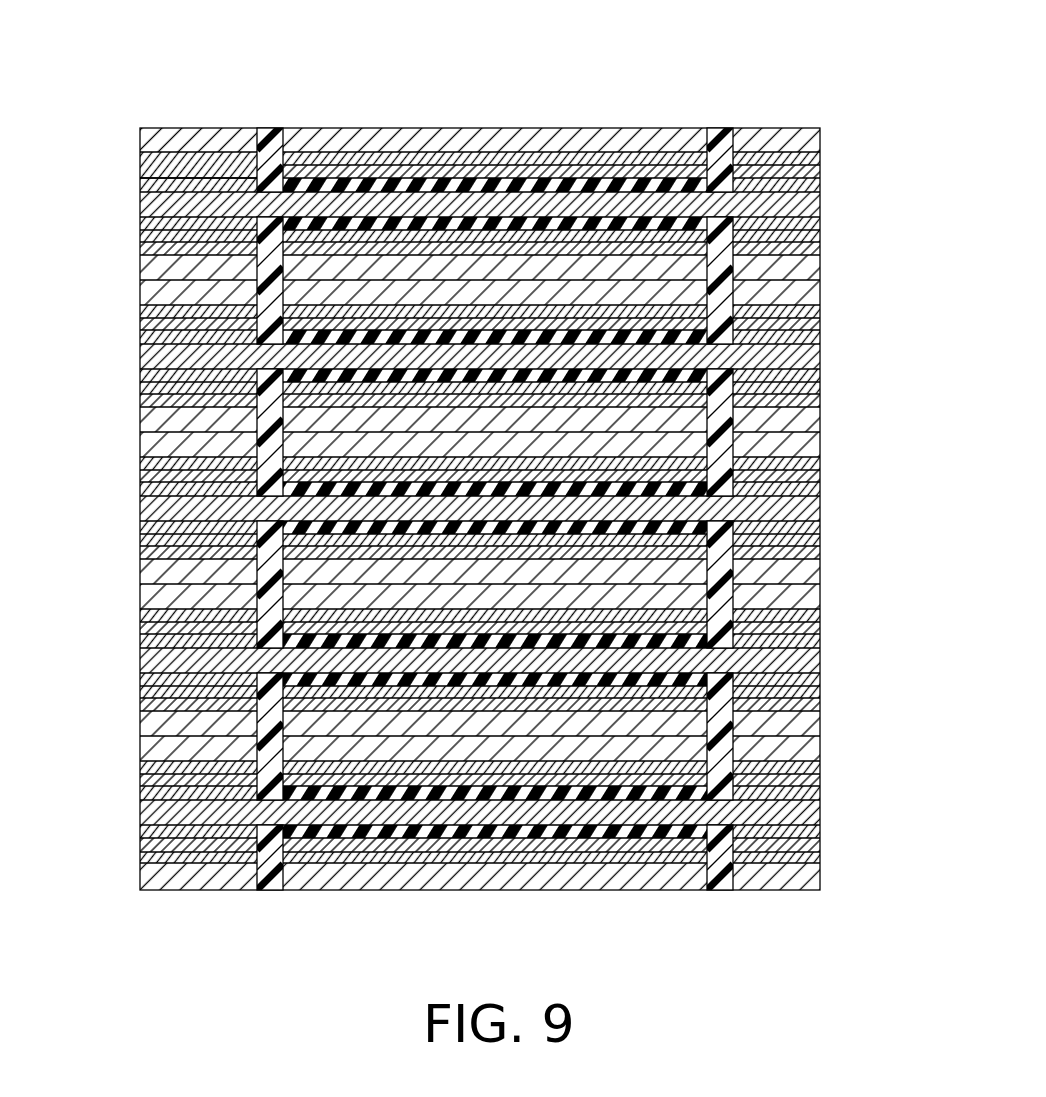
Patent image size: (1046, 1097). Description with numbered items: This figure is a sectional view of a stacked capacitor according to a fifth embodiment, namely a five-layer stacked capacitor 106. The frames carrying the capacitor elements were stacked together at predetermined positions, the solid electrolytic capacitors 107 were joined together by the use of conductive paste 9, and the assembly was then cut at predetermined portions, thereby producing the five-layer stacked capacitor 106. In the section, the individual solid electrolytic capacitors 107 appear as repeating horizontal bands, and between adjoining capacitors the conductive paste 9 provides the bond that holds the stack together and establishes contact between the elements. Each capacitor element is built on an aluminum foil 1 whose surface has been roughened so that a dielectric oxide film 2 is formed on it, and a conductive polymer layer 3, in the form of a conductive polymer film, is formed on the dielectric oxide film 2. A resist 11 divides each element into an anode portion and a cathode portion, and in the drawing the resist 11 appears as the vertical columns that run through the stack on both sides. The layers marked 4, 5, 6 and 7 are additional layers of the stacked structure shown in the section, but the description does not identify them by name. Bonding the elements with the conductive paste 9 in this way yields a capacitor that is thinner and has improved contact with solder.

The aluminum foil 1 is at (141, 205).
The dielectric oxide film 2 is at (345, 185).
The conductive polymer layer 3 is at (427, 178).
The dielectric layer 4 is at (141, 177).
The dielectric layer 5 is at (505, 158).
The cover layer 6 is at (163, 166).
The outer layer 7 is at (199, 128).
The conductive paste 9 is at (806, 141).
The resist 11 is at (273, 128).
The five-layer stacked capacitor 106 is at (578, 84).
The solid electrolytic capacitor 107 is at (832, 209).